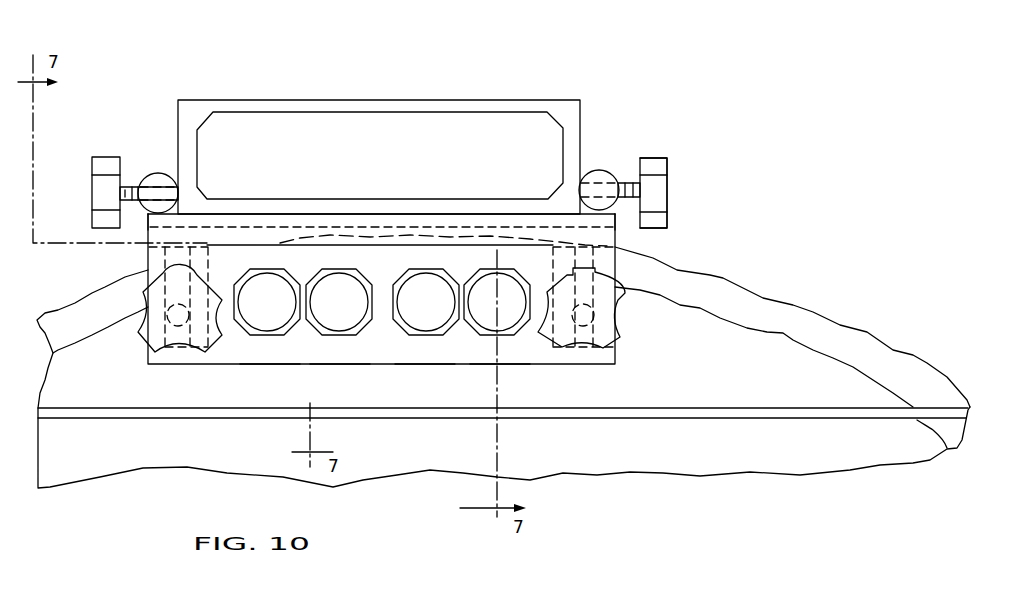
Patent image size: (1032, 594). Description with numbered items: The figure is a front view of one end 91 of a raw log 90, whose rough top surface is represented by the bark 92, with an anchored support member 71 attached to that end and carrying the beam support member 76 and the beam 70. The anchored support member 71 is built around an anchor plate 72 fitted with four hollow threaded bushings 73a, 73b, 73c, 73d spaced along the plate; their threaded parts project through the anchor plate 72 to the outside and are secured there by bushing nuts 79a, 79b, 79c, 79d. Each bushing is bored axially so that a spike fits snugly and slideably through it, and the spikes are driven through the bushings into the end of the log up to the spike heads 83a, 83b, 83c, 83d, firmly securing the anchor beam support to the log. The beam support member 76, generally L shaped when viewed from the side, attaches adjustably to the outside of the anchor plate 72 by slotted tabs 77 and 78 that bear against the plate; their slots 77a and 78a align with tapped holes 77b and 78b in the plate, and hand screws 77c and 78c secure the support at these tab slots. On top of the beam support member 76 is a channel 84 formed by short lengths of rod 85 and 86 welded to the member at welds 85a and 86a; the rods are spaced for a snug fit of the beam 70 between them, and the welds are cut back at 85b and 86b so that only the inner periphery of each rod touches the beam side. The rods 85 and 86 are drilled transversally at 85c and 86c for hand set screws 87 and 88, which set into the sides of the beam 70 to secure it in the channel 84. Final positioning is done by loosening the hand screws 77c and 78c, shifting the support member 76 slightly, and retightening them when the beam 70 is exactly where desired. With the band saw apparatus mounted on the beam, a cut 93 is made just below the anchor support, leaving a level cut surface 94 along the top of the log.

The beam 70 is at (583, 100).
The anchored support member 71 is at (684, 168).
The anchor plate 72 is at (443, 366).
The bushing 73a is at (252, 352).
The bushing 73b is at (321, 350).
The bushing 73c is at (392, 346).
The bushing 73d is at (520, 346).
The beam support member 76 is at (358, 214).
The slotted tab 77 is at (212, 268).
The slot 77a is at (148, 272).
The tapped hole 77b is at (145, 355).
The hand screw 77c is at (203, 360).
The slotted tab 78 is at (553, 263).
The slot 78a is at (620, 300).
The tapped hole 78b is at (608, 337).
The hand screw 78c is at (573, 350).
The bushing nut 79a is at (282, 337).
The bushing nut 79b is at (350, 337).
The bushing nut 79c is at (413, 337).
The bushing nut 79d is at (483, 312).
The spike head 83a is at (258, 295).
The spike head 83b is at (343, 285).
The spike head 83c is at (422, 285).
The spike head 83d is at (483, 312).
The channel 84 is at (597, 164).
The rod 85 is at (158, 173).
The weld 85a is at (143, 210).
The cut-back weld 85b is at (180, 204).
The transverse drilled hole 85c is at (165, 185).
The rod 86 is at (605, 173).
The weld 86a is at (627, 203).
The cut-back weld 86b is at (587, 207).
The transverse drilled hole 86c is at (598, 180).
The hand set screw 87 is at (92, 157).
The hand set screw 88 is at (667, 198).
The log 90 is at (866, 320).
The end of log 91 is at (777, 347).
The bark 92 is at (723, 275).
The cut 93 is at (742, 420).
The level cut surface 94 is at (692, 408).